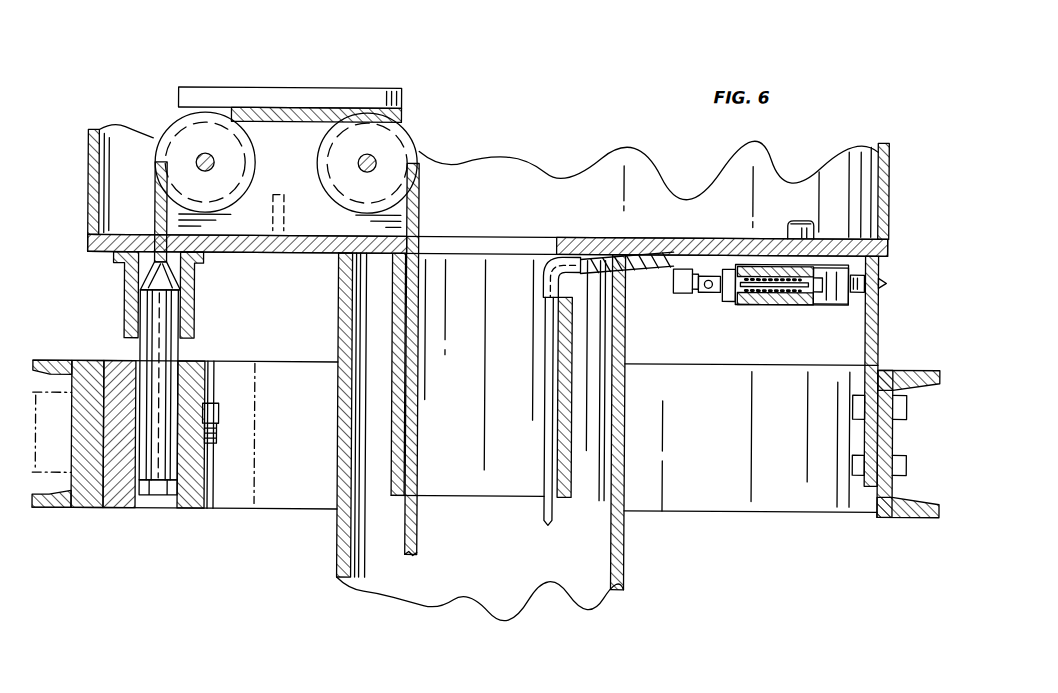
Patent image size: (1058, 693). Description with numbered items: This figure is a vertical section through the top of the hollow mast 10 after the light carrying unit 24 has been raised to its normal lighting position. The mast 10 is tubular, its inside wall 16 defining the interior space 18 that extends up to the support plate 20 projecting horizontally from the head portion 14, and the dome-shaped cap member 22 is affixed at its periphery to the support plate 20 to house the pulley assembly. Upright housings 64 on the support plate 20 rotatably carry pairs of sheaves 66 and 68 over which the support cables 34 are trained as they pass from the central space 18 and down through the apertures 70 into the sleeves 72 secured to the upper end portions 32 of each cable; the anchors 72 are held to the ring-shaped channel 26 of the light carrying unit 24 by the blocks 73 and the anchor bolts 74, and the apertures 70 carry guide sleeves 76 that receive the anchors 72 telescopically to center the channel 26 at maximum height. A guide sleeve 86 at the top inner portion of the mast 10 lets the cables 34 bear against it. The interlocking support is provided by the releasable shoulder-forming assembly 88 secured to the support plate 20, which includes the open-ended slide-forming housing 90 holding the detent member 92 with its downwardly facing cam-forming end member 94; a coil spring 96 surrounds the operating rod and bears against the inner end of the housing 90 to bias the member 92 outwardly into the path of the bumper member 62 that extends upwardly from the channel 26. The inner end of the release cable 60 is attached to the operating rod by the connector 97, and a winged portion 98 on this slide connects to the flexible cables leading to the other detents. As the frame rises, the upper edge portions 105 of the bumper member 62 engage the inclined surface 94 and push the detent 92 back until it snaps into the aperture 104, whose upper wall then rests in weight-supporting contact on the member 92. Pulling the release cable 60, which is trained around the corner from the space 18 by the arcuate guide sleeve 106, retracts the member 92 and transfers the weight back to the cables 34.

The hollow mast 10 is at (632, 562).
The head portion 14 is at (338, 530).
The inside wall 16 is at (366, 535).
The interior space 18 is at (450, 585).
The support plate 20 is at (98, 256).
The dome-shaped enclosure or cap member 22 is at (87, 150).
The light carrying unit 24 is at (61, 526).
The ring-shaped channel 26 is at (78, 362).
The upper end portions 32 is at (154, 220).
The cables 34 is at (418, 222).
The release cable 60 is at (553, 370).
The bumper members 62 is at (880, 335).
The upright housings 64 is at (400, 103).
The pulley or sheave 66 is at (402, 140).
The pulley or sheave 68 is at (215, 130).
The apertures 70 is at (178, 236).
The sleeves or anchors 72 is at (180, 350).
The blocks 73 is at (215, 395).
The anchor bolts 74 is at (219, 435).
The guide sleeves 76 is at (194, 300).
The guide sleeve 86 is at (392, 385).
The releasable shoulder-forming assemblies 88 is at (775, 311).
The slide-forming housing 90 is at (790, 305).
The shoulder-forming or detent member 92 is at (895, 285).
The cam-forming end member 94 is at (866, 320).
The coil spring 96 is at (840, 302).
The connector 97 is at (680, 293).
The winged portion 98 is at (725, 300).
The aperture 104 is at (878, 290).
The upper edge portions 105 is at (887, 250).
The arcuate guide sleeve 106 is at (552, 257).